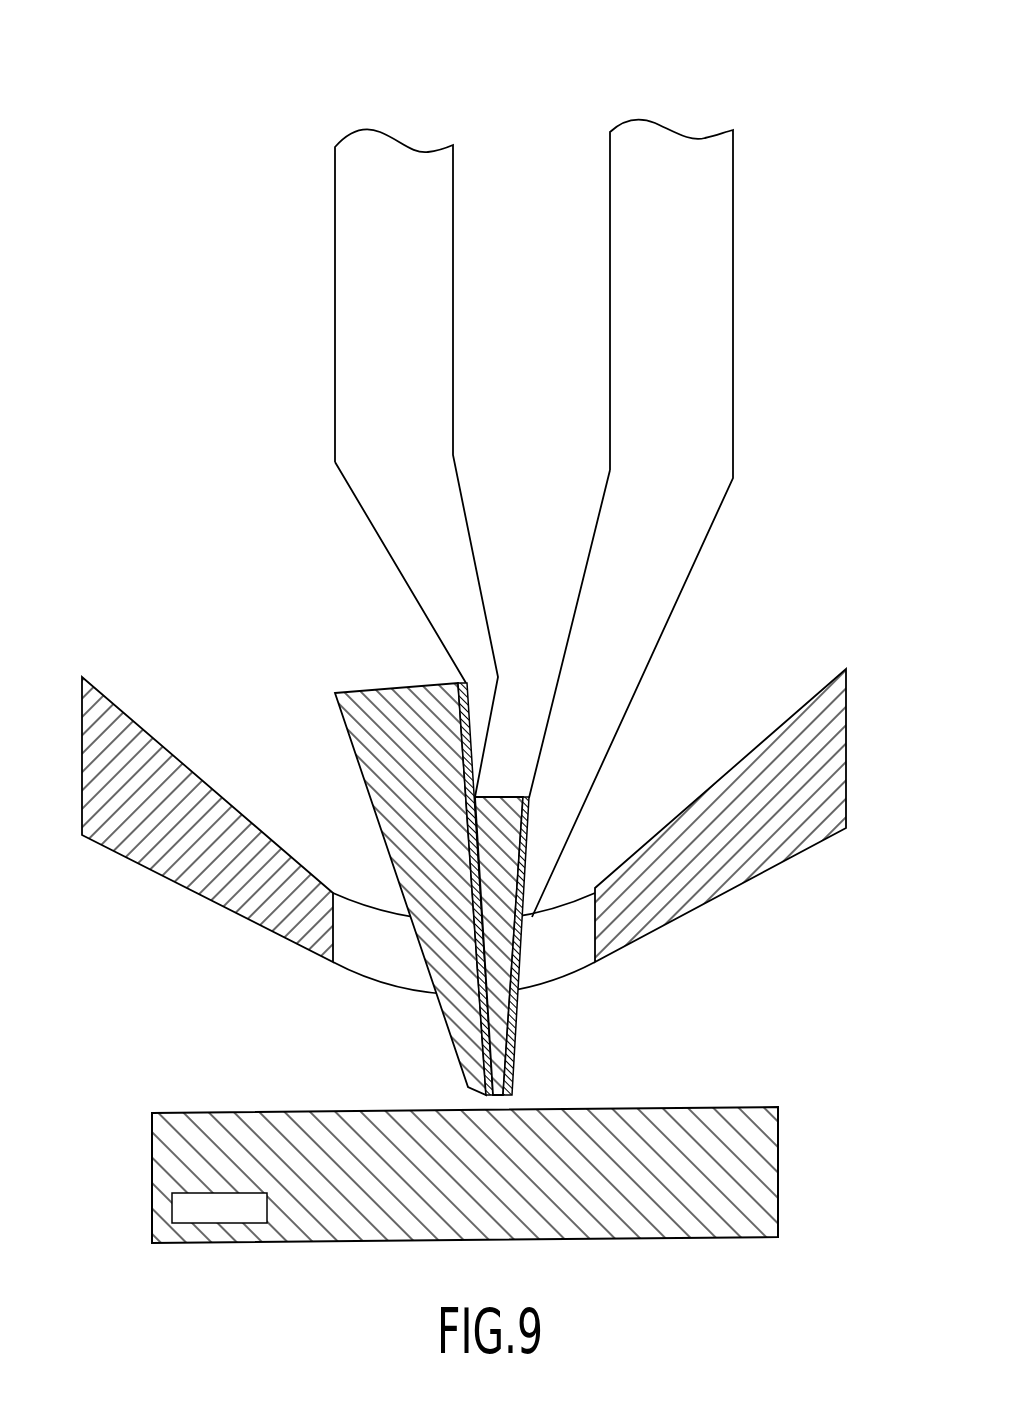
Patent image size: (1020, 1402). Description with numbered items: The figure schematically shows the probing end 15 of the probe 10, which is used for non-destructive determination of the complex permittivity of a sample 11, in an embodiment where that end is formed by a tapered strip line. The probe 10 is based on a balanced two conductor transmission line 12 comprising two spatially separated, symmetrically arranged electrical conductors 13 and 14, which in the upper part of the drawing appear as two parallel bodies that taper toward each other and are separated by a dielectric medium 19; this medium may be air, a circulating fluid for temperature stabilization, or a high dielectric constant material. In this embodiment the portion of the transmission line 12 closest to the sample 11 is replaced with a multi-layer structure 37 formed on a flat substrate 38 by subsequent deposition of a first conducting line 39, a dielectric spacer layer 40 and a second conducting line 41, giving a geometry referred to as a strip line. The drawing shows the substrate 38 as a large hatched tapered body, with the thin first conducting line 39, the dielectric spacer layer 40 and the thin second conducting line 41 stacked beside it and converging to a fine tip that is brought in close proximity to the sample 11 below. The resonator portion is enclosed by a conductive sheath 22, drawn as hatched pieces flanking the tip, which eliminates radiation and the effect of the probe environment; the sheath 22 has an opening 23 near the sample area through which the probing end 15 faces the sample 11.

The probe 10 is at (738, 64).
The sample 11 is at (780, 1183).
The balanced two conductor transmission line 12 is at (280, 239).
The first electrical conductor 13 is at (420, 218).
The second electrical conductor 14 is at (696, 202).
The probing end 15 is at (708, 1015).
The dielectric medium 19 is at (548, 232).
The cylindrical sheath 22 is at (822, 741).
The opening 23 is at (562, 918).
The multi-layer structure 37 is at (256, 704).
The flat substrate 38 is at (465, 1004).
The first conducting line 39 is at (485, 1052).
The dielectric spacer layer 40 is at (503, 812).
The second conducting line 41 is at (513, 1072).